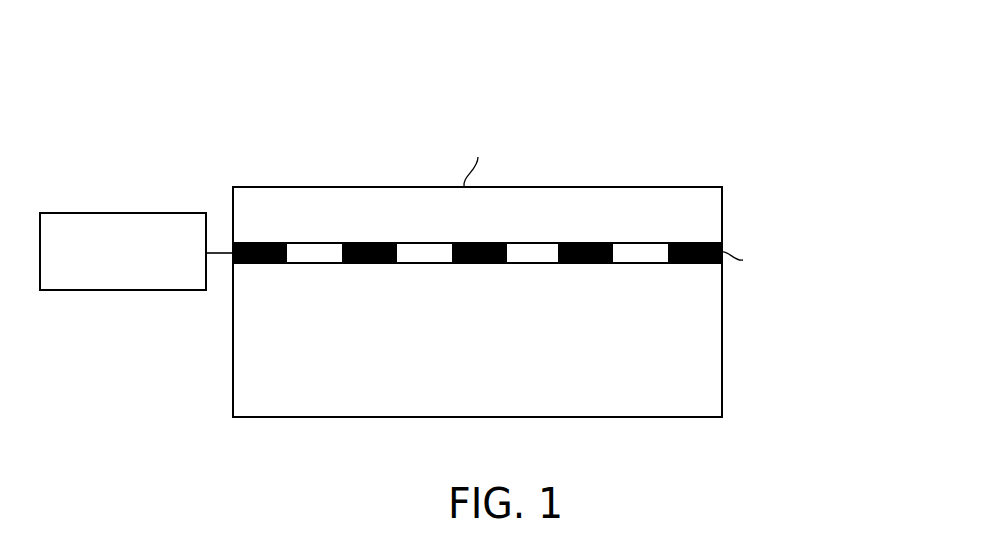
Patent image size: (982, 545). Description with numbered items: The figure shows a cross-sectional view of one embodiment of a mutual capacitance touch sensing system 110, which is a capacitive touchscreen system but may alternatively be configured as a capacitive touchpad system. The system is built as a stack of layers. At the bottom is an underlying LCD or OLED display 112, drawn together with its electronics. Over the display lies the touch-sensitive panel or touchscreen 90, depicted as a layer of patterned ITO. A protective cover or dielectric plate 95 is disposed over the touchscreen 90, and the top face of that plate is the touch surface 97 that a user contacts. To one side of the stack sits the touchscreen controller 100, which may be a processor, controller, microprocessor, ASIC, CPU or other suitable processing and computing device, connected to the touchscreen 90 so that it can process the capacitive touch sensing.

The mutual capacitance touch sensing system 110 is at (175, 96).
The touchscreen controller 100 is at (127, 291).
The touch surface 97 is at (640, 187).
The dielectric plate 95 is at (695, 202).
The touchscreen 90 is at (723, 243).
The LCD display 112 is at (693, 353).